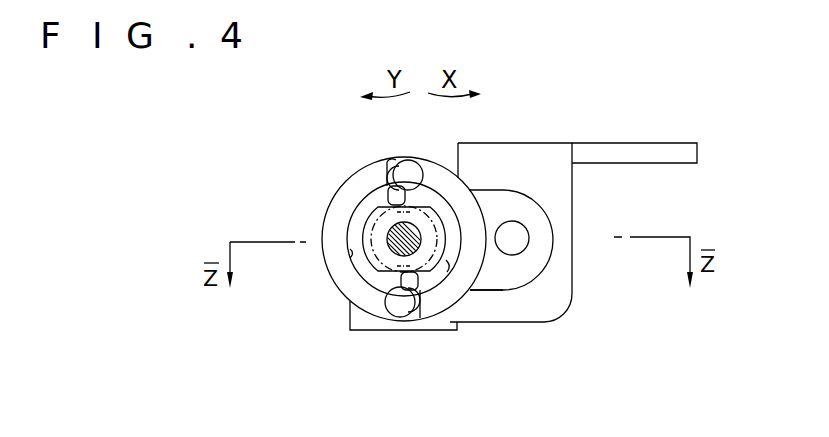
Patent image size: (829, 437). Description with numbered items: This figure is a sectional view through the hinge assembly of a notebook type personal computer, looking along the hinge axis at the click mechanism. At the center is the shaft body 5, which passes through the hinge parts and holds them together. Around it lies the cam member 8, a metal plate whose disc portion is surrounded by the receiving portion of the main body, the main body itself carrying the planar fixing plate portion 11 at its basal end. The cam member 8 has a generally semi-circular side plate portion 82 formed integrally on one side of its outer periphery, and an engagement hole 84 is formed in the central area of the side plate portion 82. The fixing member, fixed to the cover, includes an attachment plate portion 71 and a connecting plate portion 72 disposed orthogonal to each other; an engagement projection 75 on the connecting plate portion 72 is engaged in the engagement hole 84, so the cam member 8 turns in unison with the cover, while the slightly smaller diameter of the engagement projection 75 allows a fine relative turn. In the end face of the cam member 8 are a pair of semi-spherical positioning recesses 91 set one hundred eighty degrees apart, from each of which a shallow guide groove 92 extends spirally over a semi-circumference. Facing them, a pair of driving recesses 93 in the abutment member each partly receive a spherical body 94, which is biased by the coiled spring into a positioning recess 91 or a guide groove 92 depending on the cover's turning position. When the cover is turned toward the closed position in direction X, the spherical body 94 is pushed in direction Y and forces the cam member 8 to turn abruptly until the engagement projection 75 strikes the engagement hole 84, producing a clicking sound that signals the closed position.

The shaft body 5 is at (387, 237).
The cam member 8 is at (333, 213).
The fixing plate portion 11 is at (363, 331).
The attachment plate portion 71 is at (664, 142).
The connecting plate portion 72 is at (572, 204).
The engagement projection 75 is at (515, 245).
The side plate portion 82 is at (503, 292).
The engagement hole 84 is at (513, 228).
The positioning recess 91 is at (392, 160).
The guide groove 92 is at (350, 257).
The driving recess 93 is at (352, 176).
The spherical body 94 is at (410, 170).